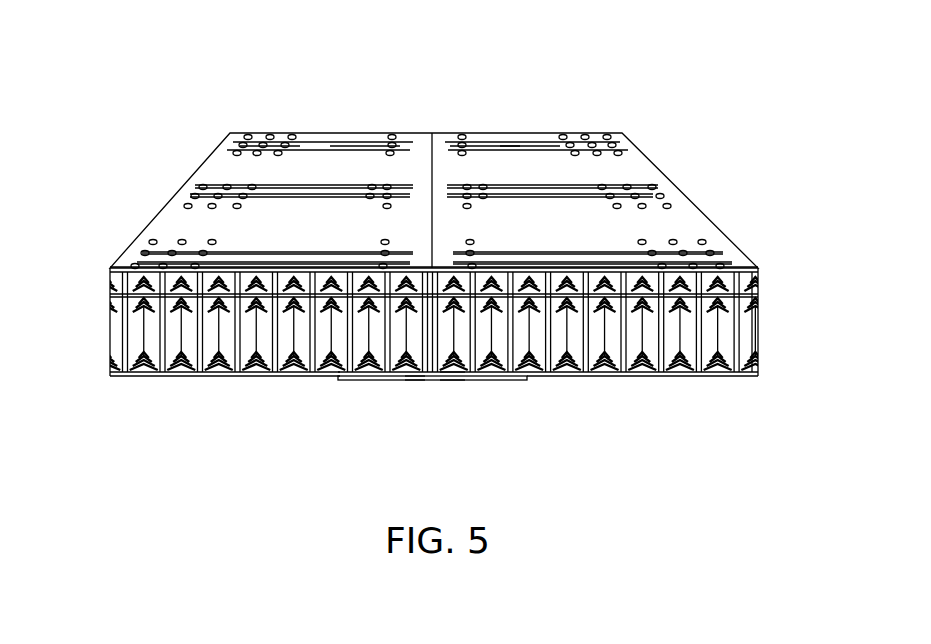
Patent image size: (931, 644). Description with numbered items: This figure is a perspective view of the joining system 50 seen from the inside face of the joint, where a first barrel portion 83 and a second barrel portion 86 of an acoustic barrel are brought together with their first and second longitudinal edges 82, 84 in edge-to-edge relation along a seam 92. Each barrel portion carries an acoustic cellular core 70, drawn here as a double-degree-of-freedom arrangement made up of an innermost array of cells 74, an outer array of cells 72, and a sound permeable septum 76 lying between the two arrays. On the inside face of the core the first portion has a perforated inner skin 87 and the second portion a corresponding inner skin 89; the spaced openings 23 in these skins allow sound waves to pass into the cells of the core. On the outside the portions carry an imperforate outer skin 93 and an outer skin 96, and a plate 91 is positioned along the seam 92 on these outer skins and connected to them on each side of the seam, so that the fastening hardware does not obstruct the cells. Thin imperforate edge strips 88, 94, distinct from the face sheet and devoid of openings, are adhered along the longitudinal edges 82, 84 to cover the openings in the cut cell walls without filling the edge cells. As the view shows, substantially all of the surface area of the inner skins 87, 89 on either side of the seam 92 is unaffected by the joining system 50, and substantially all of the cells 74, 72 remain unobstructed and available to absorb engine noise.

The joining system 50 is at (728, 78).
The spaced openings 23 is at (185, 207).
The acoustic cellular core 70 is at (138, 328).
The outer array of cells 72 is at (748, 286).
The innermost array of cells 74 is at (754, 354).
The sound permeable septum 76 is at (755, 308).
The first longitudinal edge 82 is at (400, 133).
The first barrel portion 83 is at (300, 137).
The second longitudinal edge 84 is at (458, 133).
The second barrel portion 86 is at (550, 133).
The perforated inner skin 87 is at (316, 238).
The edge strip 88 is at (413, 381).
The inner skin 89 is at (571, 238).
The plate 91 is at (343, 381).
The seam 92 is at (434, 148).
The imperforate outer skin 93 is at (192, 378).
The edge strip 94 is at (452, 381).
The outer skin 96 is at (690, 378).